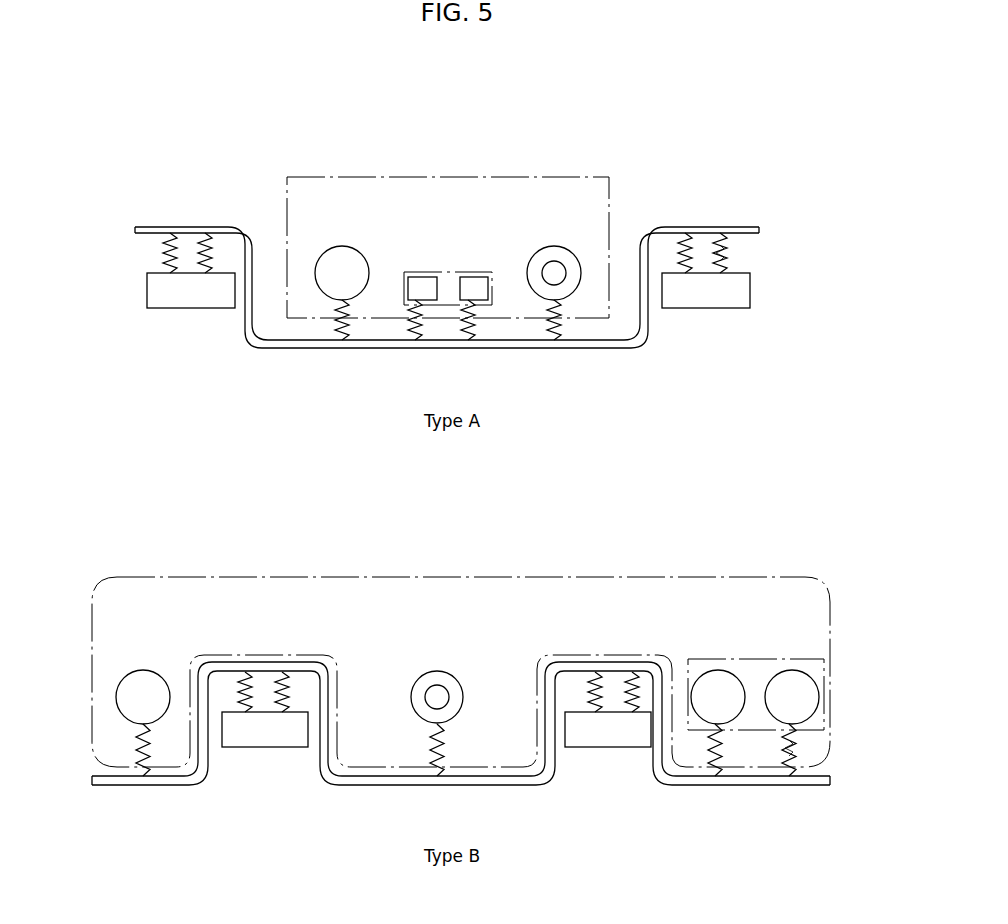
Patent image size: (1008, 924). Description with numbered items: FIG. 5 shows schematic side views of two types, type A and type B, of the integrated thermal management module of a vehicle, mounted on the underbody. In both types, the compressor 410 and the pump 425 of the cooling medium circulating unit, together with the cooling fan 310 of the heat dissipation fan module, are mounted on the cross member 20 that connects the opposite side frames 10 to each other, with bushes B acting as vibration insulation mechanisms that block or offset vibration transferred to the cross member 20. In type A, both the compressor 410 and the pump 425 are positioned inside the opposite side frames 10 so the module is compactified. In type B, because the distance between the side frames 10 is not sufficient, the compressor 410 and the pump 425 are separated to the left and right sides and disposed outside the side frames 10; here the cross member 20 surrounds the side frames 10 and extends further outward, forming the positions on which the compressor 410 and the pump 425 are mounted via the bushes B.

The side frame 10 is at (192, 303).
The cross member 20 is at (708, 226).
The cooling fan 310 is at (555, 246).
The compressor 410 is at (343, 246).
The pump 425 is at (450, 272).
The bush B is at (729, 257).